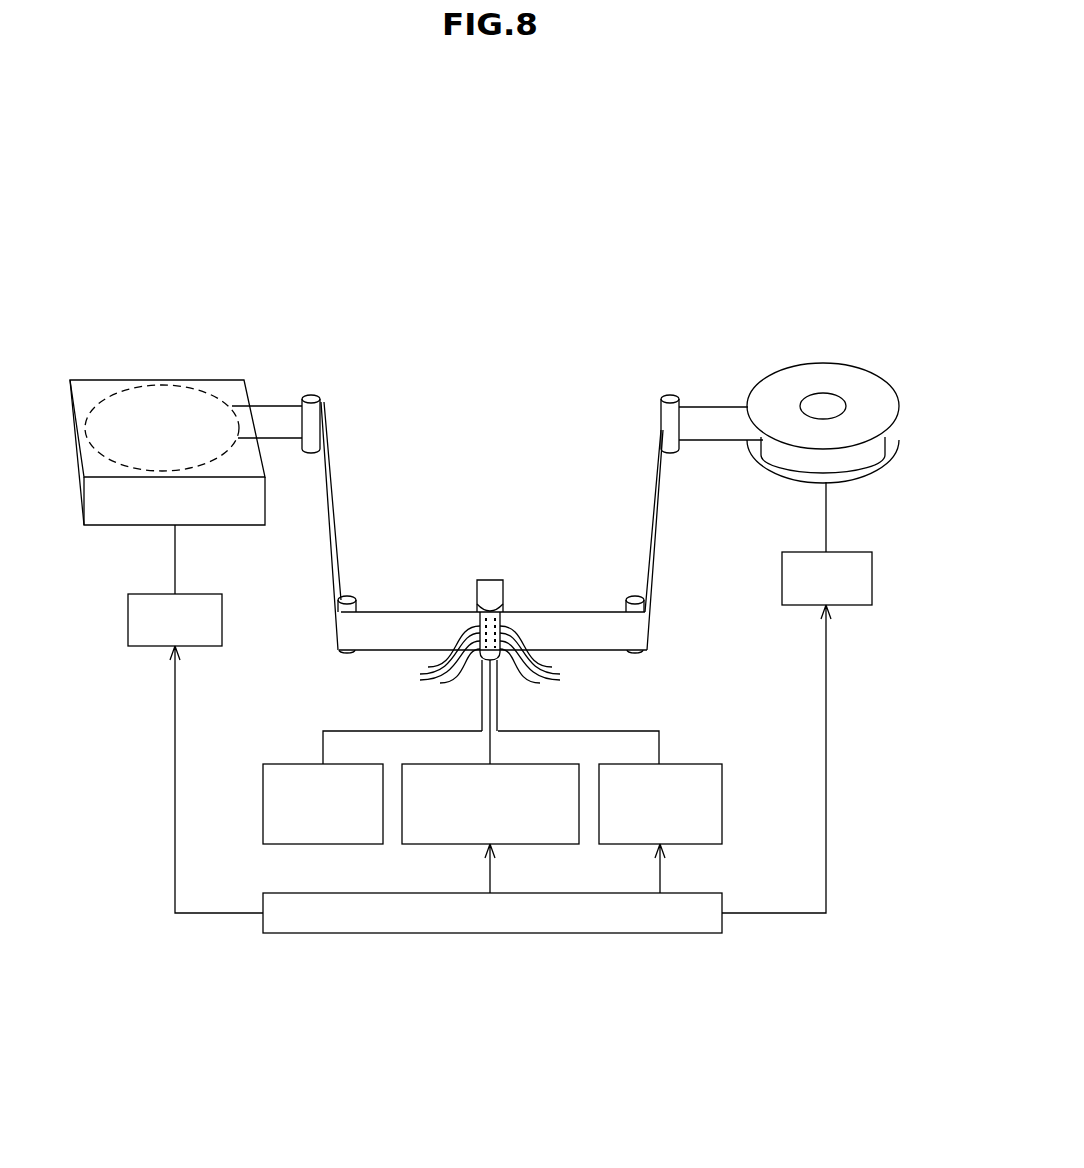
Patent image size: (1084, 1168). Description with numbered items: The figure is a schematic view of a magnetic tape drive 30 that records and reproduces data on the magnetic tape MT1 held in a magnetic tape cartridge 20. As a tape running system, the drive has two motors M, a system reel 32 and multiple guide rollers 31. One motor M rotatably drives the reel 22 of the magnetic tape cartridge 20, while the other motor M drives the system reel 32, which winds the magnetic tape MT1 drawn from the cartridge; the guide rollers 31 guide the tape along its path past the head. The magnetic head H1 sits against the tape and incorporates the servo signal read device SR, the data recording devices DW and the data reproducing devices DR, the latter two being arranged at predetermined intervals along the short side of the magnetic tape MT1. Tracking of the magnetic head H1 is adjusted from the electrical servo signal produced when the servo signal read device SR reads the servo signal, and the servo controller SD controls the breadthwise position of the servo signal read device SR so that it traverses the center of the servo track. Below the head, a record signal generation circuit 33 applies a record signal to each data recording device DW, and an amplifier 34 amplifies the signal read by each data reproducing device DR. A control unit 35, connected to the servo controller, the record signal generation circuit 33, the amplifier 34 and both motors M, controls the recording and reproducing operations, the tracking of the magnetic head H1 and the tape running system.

The magnetic tape cartridge 20 is at (176, 380).
The reel 22 is at (100, 405).
The magnetic tape drive 30 is at (545, 276).
The guide roller 31 is at (311, 395).
The system reel 32 is at (776, 385).
The record signal generation circuit 33 is at (520, 845).
The amplifier 34 is at (683, 763).
The control unit 35 is at (628, 933).
The magnetic head H1 is at (487, 580).
The servo signal read device SR is at (478, 617).
The data recording device DW is at (435, 655).
The data reproducing device DR is at (543, 656).
The magnetic tape MT1 is at (553, 612).
The servo controller SD is at (300, 764).
The motor M is at (222, 620).